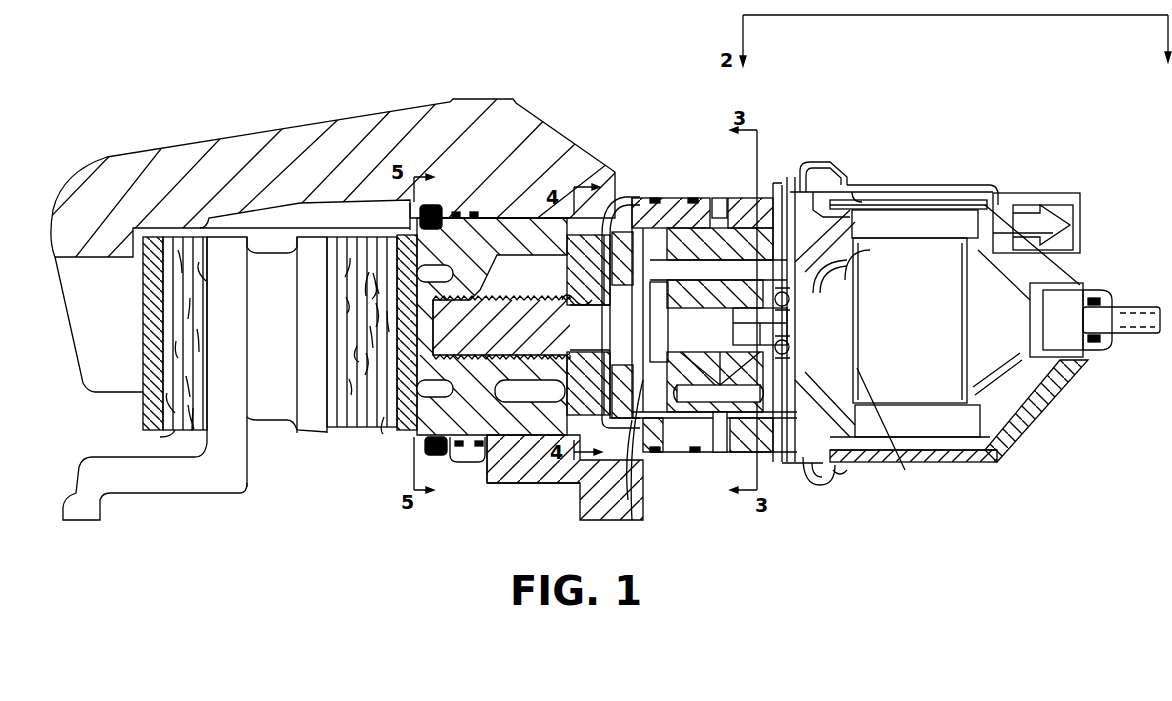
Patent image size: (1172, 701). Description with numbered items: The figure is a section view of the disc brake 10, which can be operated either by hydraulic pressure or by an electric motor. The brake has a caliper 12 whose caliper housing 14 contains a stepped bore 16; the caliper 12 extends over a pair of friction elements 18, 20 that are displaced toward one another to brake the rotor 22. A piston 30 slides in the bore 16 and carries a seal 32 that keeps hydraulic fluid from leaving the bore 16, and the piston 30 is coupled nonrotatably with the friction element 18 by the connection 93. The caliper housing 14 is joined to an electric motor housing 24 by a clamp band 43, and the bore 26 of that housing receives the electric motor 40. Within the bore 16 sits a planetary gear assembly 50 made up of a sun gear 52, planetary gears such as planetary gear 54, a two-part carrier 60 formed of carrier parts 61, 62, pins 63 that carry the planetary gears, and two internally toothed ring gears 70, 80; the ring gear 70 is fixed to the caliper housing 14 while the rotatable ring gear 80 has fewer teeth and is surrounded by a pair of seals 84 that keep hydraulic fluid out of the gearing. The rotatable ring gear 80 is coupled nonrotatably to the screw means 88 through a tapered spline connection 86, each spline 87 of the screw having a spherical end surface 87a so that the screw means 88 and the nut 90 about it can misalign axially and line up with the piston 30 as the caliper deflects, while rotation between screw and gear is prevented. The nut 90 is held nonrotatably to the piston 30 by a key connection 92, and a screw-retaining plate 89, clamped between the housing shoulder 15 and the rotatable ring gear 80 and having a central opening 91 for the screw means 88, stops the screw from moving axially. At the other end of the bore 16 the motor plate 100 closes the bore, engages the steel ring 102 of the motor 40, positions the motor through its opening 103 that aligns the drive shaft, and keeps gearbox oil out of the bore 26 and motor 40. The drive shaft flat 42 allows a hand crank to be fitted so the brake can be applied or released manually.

The disc brake 10 is at (537, 92).
The caliper 12 is at (235, 137).
The caliper housing 14 is at (777, 182).
The housing shoulder 15 is at (620, 185).
The bore 16 is at (630, 222).
The friction element 18 is at (345, 428).
The friction element 20 is at (160, 432).
The rotor 22 is at (281, 376).
The electric motor housing 24 is at (958, 186).
The bore 26 is at (868, 192).
The piston 30 is at (484, 462).
The seal 32 is at (470, 456).
The electric motor 40 is at (914, 336).
The drive shaft flat 42 is at (1133, 312).
The clamp band 43 is at (838, 168).
The planetary gear assembly 50 is at (801, 499).
The sun gear 52 is at (730, 314).
The planetary gear 54 is at (700, 308).
The two-part carrier 60 is at (700, 349).
The carrier part 61 is at (776, 393).
The carrier part 62 is at (660, 393).
The pin 63 is at (718, 268).
The ring gear 70 is at (742, 200).
The rotatable ring gear 80 is at (712, 200).
The seals 84 is at (692, 198).
The tapered spline connection 86 is at (618, 300).
The spline 87 is at (582, 485).
The spherical end surface 87a is at (638, 500).
The screw means 88 is at (500, 310).
The screw-retaining plate 89 is at (582, 505).
The nut 90 is at (567, 272).
The central opening 91 is at (565, 305).
The key connection 92 is at (537, 455).
The connection 93 is at (397, 235).
The motor plate 100 is at (822, 482).
The steel ring 102 is at (905, 205).
The opening 103 is at (887, 370).